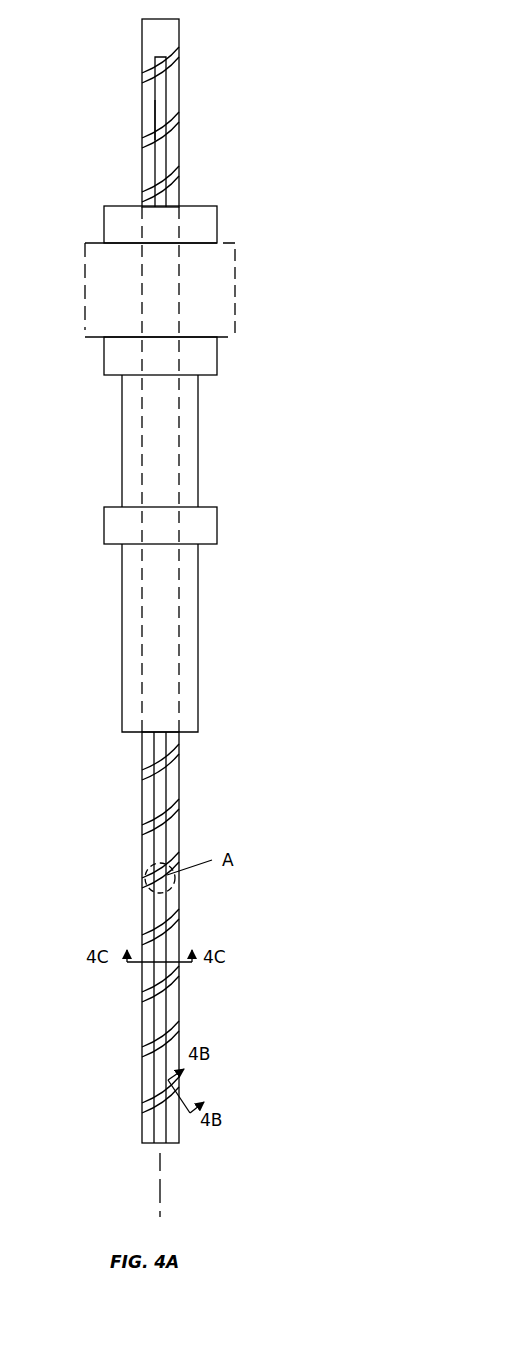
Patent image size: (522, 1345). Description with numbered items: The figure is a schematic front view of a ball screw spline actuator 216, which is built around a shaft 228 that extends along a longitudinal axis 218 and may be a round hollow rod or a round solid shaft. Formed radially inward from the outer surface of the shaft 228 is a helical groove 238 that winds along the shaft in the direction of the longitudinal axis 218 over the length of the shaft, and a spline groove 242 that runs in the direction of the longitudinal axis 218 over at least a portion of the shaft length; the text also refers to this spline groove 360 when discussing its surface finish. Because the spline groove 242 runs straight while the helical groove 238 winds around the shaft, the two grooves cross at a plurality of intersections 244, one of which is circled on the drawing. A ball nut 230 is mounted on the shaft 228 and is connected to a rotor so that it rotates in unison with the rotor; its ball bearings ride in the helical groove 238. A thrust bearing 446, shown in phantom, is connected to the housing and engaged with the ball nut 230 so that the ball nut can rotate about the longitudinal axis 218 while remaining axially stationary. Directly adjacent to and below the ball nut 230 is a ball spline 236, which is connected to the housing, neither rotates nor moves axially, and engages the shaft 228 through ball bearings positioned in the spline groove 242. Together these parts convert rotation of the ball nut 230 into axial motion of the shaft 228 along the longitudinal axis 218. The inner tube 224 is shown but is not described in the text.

The ball screw spline actuator 216 is at (282, 131).
The longitudinal axis 218 is at (160, 1167).
The inner tube 224 is at (167, 78).
The shaft 228 is at (179, 30).
The ball nut 230 is at (198, 424).
The ball spline 236 is at (198, 610).
The helical groove 238 is at (152, 72).
The spline groove 242 is at (167, 784).
The intersections 244 is at (175, 888).
The spline groove 360 is at (153, 108).
The thrust bearing 446 is at (236, 268).